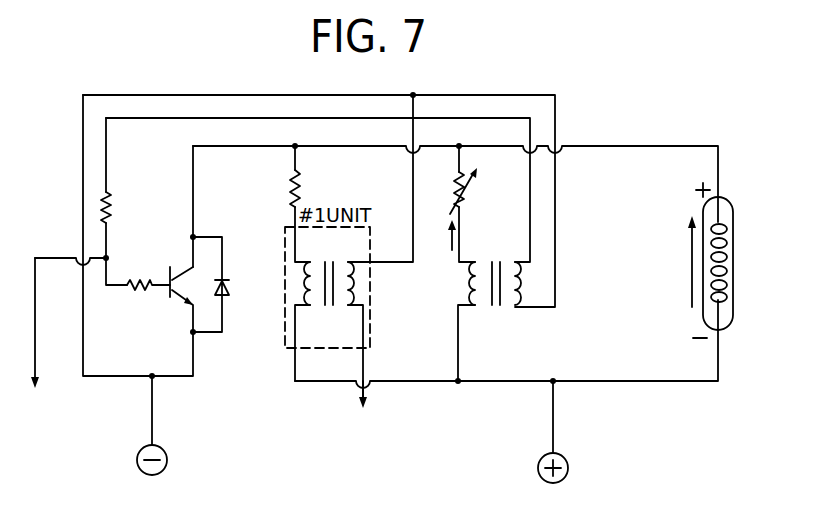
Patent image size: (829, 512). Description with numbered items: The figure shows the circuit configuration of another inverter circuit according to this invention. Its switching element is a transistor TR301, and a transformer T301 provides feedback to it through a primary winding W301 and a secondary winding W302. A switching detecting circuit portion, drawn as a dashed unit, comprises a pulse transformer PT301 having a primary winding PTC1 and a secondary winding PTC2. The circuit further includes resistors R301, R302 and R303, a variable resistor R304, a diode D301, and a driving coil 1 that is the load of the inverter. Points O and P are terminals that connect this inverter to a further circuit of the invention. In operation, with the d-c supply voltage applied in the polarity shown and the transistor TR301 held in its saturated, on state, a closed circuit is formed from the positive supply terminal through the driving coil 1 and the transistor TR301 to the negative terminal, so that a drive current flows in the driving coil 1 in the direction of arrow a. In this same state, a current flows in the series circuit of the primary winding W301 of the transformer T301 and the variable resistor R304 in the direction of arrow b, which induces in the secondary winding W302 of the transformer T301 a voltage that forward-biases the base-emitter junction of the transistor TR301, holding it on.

The resistor R301 is at (111, 206).
The resistor R302 is at (137, 292).
The resistor R303 is at (300, 190).
The variable resistor R304 is at (470, 200).
The transistor TR301 is at (178, 276).
The diode D301 is at (230, 290).
The pulse transformer PT301 is at (330, 272).
The primary winding of the pulse transformer PTC1 is at (303, 283).
The secondary winding of the pulse transformer PTC2 is at (355, 284).
The transformer T301 is at (494, 298).
The primary winding of the transformer W301 is at (468, 292).
The secondary winding of the transformer W302 is at (520, 292).
The driving coil 1 is at (727, 197).
The arrow a is at (690, 250).
The arrow b is at (450, 246).
The point P is at (33, 340).
The point O is at (363, 411).